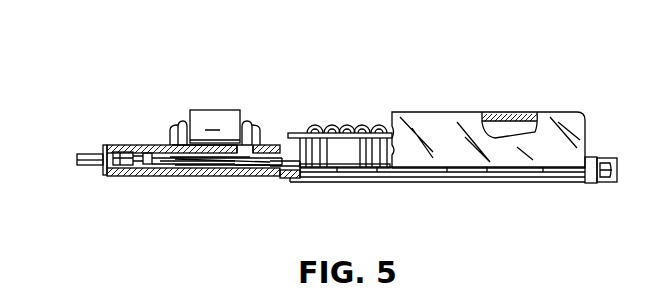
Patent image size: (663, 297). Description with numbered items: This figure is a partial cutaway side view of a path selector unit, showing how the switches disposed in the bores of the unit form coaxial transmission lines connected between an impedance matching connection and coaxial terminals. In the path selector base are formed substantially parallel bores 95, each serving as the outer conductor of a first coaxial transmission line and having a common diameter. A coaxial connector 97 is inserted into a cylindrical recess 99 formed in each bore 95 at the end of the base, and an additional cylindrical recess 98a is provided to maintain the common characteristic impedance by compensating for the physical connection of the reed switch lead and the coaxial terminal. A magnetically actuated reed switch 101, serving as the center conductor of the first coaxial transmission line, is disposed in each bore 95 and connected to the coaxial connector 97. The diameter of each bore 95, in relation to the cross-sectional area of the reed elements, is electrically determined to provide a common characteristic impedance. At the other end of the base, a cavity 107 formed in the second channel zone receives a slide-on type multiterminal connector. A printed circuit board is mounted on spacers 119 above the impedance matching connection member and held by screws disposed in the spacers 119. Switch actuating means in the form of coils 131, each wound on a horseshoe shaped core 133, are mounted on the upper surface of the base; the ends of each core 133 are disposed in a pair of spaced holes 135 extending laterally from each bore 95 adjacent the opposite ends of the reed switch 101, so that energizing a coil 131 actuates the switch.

The coaxial connector 97 is at (80, 154).
The cylindrical recess 99 is at (120, 150).
The coupling member 98a is at (160, 176).
The bore 95 is at (166, 170).
The magnetically actuated reed switch 101 is at (232, 172).
The horseshoe shaped core 133 is at (182, 124).
The spaced holes 135 is at (176, 145).
The coil 131 is at (200, 110).
The spacers 119 is at (300, 147).
The cavity 107 is at (320, 170).